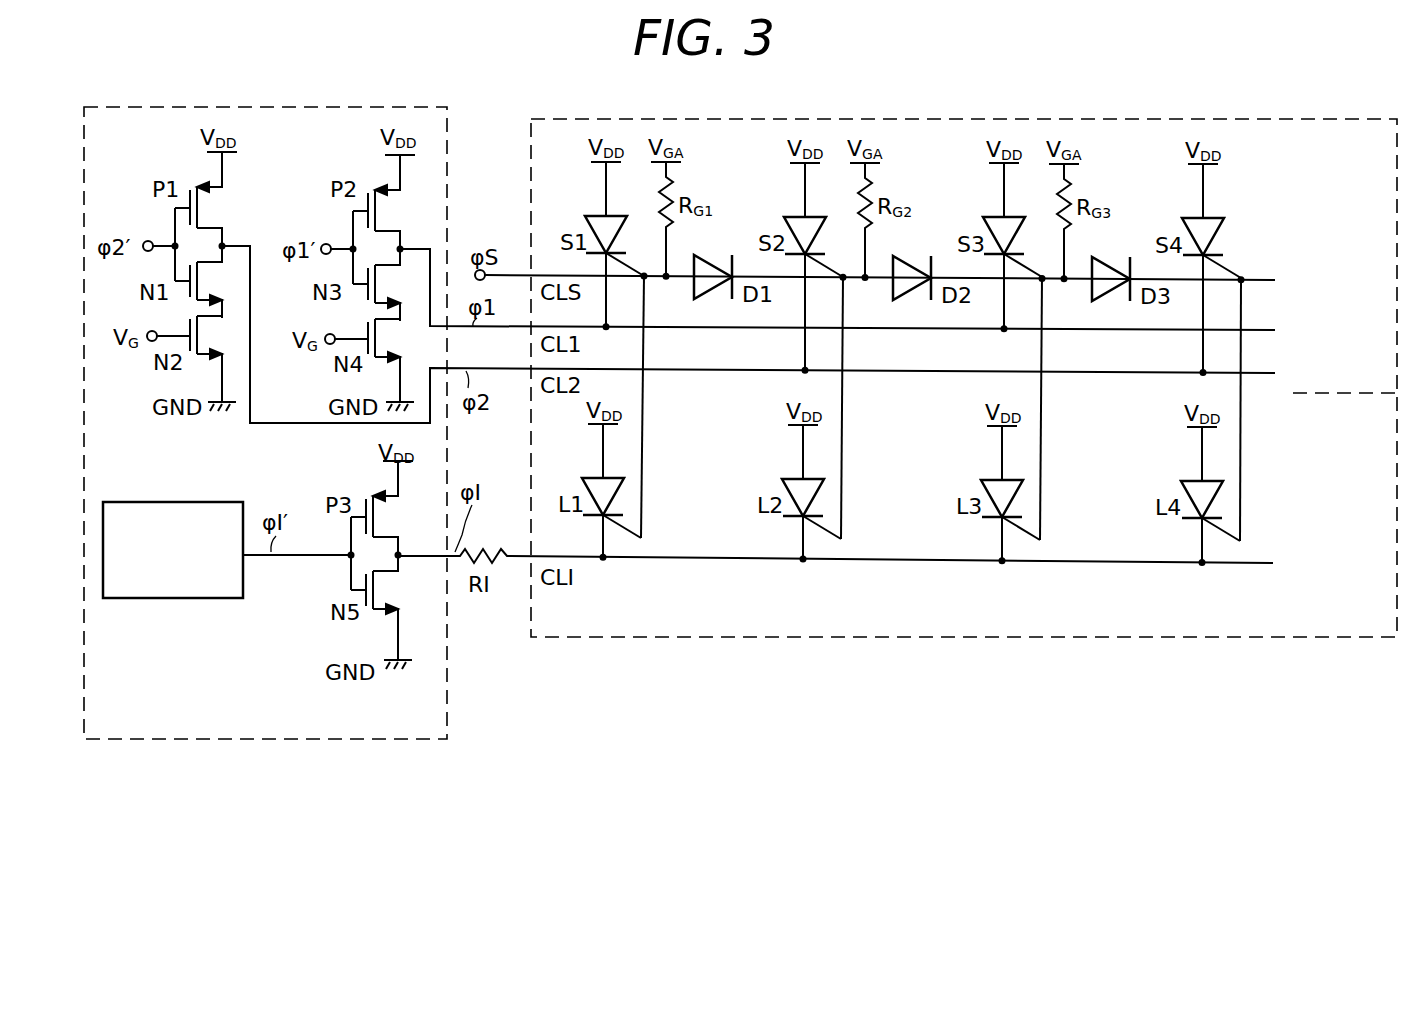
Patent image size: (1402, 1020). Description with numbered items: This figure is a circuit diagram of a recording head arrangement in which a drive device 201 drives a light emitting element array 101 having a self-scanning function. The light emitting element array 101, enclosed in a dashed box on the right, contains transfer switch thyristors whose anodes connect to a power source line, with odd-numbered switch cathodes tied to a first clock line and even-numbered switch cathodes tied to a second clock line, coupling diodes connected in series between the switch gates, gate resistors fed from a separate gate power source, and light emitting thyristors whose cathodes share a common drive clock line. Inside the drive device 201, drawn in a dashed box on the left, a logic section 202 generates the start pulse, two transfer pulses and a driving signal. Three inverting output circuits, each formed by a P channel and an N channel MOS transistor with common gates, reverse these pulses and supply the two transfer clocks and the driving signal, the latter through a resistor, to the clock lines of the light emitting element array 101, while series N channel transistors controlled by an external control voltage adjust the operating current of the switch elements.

The light emitting element array 101 is at (725, 640).
The drive device 201 is at (150, 741).
The logic section 202 is at (214, 502).